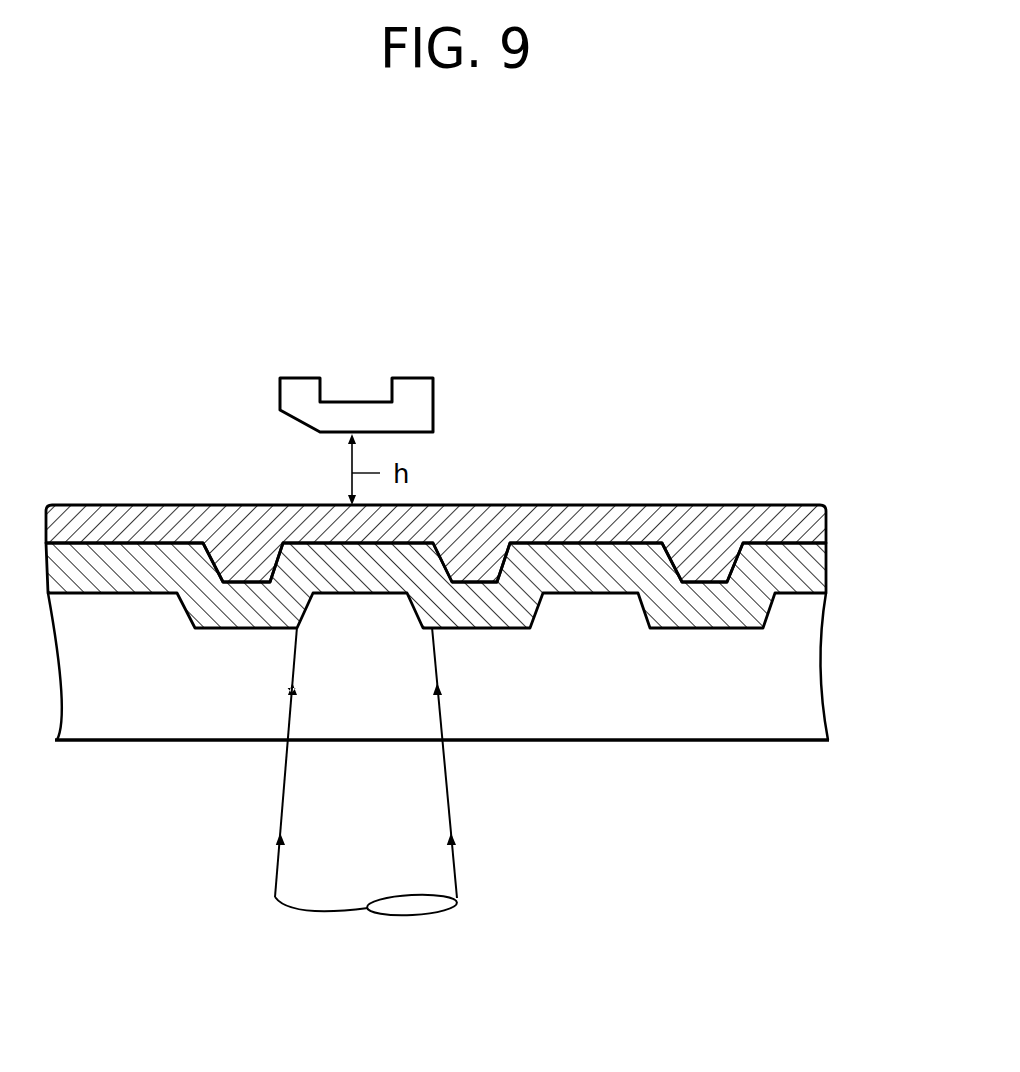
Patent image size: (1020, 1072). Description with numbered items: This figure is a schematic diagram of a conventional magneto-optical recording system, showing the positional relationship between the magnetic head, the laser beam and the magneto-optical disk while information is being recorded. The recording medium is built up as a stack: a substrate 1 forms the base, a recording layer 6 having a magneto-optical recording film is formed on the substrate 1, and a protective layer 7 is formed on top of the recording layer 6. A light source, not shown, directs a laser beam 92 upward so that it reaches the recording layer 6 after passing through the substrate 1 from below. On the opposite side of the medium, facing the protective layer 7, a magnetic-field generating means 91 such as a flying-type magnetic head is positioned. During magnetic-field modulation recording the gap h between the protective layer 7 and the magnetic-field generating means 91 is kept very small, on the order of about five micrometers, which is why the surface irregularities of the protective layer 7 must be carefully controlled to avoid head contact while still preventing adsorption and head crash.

The substrate 1 is at (805, 688).
The recording layer 6 is at (842, 565).
The protective layer 7 is at (797, 508).
The magnetic-field generating means 91 is at (427, 398).
The laser beam 92 is at (430, 875).